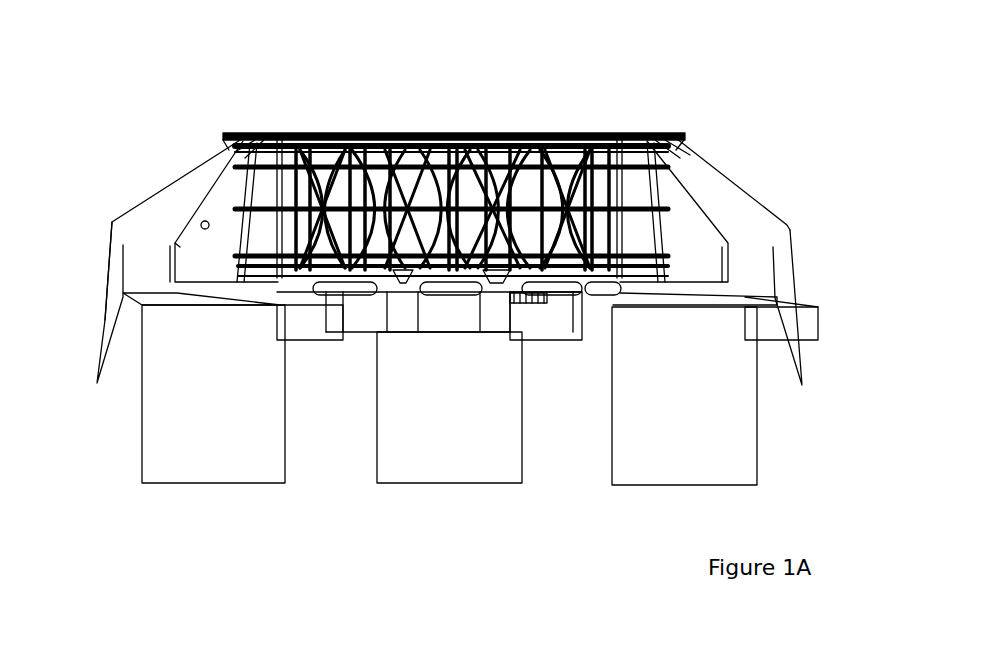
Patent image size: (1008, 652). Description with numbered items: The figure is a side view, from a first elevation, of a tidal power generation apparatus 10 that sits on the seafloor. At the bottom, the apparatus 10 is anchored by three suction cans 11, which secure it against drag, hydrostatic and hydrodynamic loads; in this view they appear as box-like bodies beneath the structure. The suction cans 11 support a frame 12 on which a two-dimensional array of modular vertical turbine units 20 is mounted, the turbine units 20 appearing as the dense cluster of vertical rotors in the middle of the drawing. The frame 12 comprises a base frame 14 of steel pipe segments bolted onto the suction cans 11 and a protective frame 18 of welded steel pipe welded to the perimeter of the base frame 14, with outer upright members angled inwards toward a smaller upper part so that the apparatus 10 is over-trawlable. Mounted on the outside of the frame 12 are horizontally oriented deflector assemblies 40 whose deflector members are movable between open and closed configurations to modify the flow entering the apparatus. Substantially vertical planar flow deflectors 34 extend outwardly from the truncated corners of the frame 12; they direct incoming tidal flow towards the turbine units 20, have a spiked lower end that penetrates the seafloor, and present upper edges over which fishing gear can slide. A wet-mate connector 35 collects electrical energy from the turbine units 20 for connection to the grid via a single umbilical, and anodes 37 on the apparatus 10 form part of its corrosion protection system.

The tidal power generation apparatus 10 is at (815, 115).
The suction cans 11 is at (150, 425).
The frame 12 is at (678, 130).
The base frame 14 is at (208, 276).
The protective frame 18 is at (374, 132).
The modular vertical turbine units 20 is at (515, 162).
The flow deflectors 34 is at (123, 245).
The wet-mate connector 35 is at (517, 302).
The anodes 37 is at (427, 292).
The deflector assemblies 40 is at (278, 133).